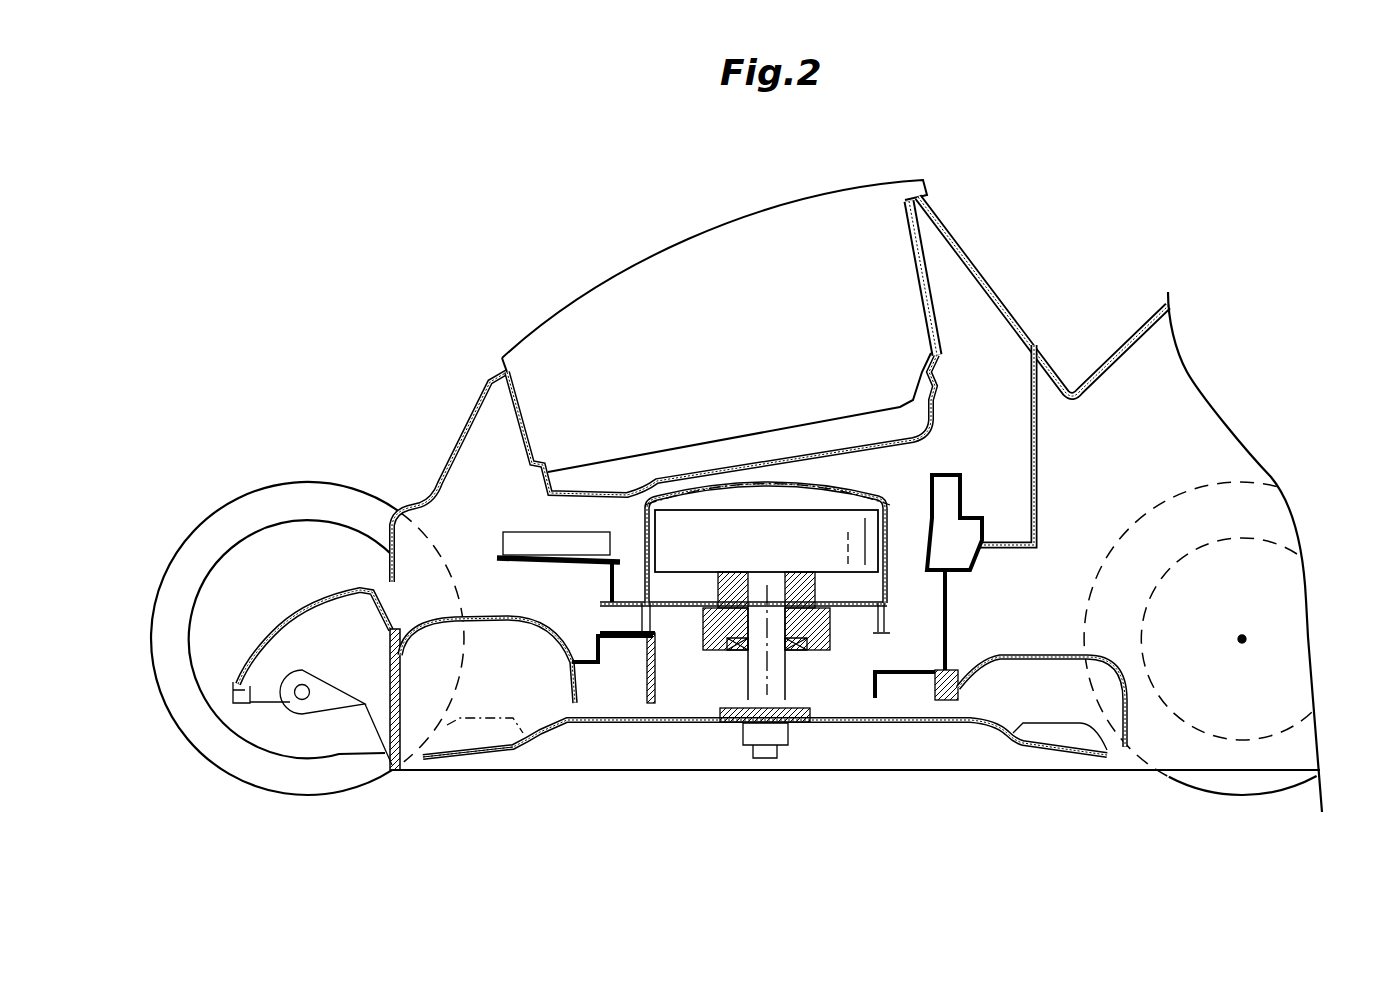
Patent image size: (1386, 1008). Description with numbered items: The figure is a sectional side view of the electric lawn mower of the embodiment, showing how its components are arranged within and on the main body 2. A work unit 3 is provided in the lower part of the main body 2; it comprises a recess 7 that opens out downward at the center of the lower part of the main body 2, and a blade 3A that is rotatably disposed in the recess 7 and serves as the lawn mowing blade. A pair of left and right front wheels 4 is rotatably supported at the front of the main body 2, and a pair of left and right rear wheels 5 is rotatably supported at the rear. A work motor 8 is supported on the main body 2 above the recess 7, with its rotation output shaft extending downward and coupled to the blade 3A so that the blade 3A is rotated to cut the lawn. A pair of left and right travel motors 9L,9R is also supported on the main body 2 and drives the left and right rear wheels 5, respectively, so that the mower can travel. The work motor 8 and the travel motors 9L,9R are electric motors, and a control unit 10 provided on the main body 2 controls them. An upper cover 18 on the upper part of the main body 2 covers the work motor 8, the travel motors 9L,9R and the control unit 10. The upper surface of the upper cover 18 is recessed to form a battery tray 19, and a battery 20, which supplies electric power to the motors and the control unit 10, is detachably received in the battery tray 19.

The main body 2 is at (312, 597).
The work unit 3 is at (827, 733).
The blade 3A is at (633, 723).
The front wheels 4 is at (247, 768).
The rear wheels 5 is at (1233, 778).
The recess 7 is at (490, 622).
The work motor 8 is at (870, 555).
The travel motors 9L,9R is at (1275, 543).
The control unit 10 is at (523, 533).
The upper cover 18 is at (997, 278).
The battery tray 19 is at (923, 250).
The battery 20 is at (582, 312).